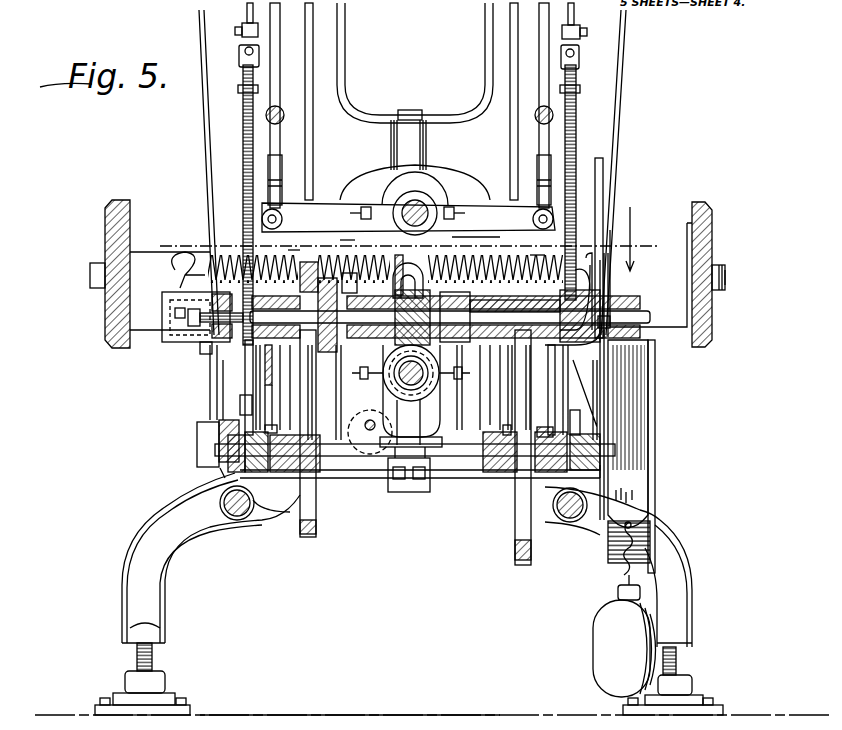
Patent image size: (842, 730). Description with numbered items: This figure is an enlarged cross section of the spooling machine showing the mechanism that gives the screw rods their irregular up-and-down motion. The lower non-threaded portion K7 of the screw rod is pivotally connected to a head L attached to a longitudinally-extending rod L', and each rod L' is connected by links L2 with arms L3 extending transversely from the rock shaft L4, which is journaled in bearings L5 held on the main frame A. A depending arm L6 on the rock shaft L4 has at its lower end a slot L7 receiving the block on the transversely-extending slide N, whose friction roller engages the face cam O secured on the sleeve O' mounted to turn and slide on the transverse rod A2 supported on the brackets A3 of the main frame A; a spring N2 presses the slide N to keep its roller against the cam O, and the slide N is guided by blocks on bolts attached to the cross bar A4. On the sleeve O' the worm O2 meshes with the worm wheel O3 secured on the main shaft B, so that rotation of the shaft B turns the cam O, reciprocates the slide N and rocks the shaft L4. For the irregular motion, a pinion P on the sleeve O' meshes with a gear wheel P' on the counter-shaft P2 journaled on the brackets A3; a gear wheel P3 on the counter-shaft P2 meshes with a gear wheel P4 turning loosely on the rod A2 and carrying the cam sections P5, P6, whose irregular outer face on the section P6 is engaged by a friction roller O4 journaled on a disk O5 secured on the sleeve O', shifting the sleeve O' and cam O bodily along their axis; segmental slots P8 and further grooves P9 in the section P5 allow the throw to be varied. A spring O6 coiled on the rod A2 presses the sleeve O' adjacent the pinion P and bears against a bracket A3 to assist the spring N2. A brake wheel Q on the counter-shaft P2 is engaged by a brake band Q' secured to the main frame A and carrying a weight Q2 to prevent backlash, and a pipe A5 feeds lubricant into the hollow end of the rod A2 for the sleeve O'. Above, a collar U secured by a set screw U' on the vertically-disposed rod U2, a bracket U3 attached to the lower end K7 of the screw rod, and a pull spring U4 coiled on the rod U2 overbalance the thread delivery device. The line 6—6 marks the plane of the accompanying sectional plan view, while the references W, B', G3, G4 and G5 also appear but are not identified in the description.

The main frame A is at (137, 543).
The transversely-extending guideway rod A2 is at (215, 352).
The brackets A3 is at (225, 402).
The cross bar A4 is at (160, 335).
The lubricant pipe A5 is at (603, 190).
The wheel W is at (103, 305).
The brake wheel Q is at (644, 451).
The brake band Q' is at (643, 451).
The weight Q2 is at (624, 609).
The collar U is at (409, 172).
The set screw U' is at (437, 38).
The vertically-disposed rod U2 is at (247, 14).
The bracket U3 is at (245, 62).
The pull spring U4 is at (245, 143).
The lower non-threaded portion of screw rod K7 is at (340, 17).
The head L is at (409, 105).
The longitudinally-extending rod L' is at (409, 122).
The links L2 is at (282, 160).
The arms L3 is at (408, 217).
The rock shaft L4 is at (432, 210).
The bearings L5 is at (395, 185).
The depending arm L6 is at (450, 237).
The slot L7 is at (422, 280).
The pinion P is at (538, 245).
The gear wheel P' is at (535, 453).
The counter-shaft P2 is at (492, 470).
The gear wheel P3 is at (313, 537).
The gear wheel P4 is at (292, 248).
The cam section P5 is at (281, 387).
The cam section P6 is at (347, 240).
The segmental slots P8 is at (313, 264).
The segmental grooves P9 is at (271, 387).
The face cam O is at (478, 387).
The sleeve O' is at (505, 330).
The worm O2 is at (411, 370).
The worm wheel O3 is at (385, 392).
The friction roller O4 is at (386, 266).
The disk O5 is at (330, 360).
The spring O6 is at (573, 290).
The slide N is at (610, 317).
The spring N2 is at (226, 240).
The main shaft B is at (425, 411).
The base B' is at (418, 426).
The pin G3 is at (370, 430).
The floor G4 is at (350, 722).
The block G5 is at (385, 482).
The section line 6 is at (408, 247).